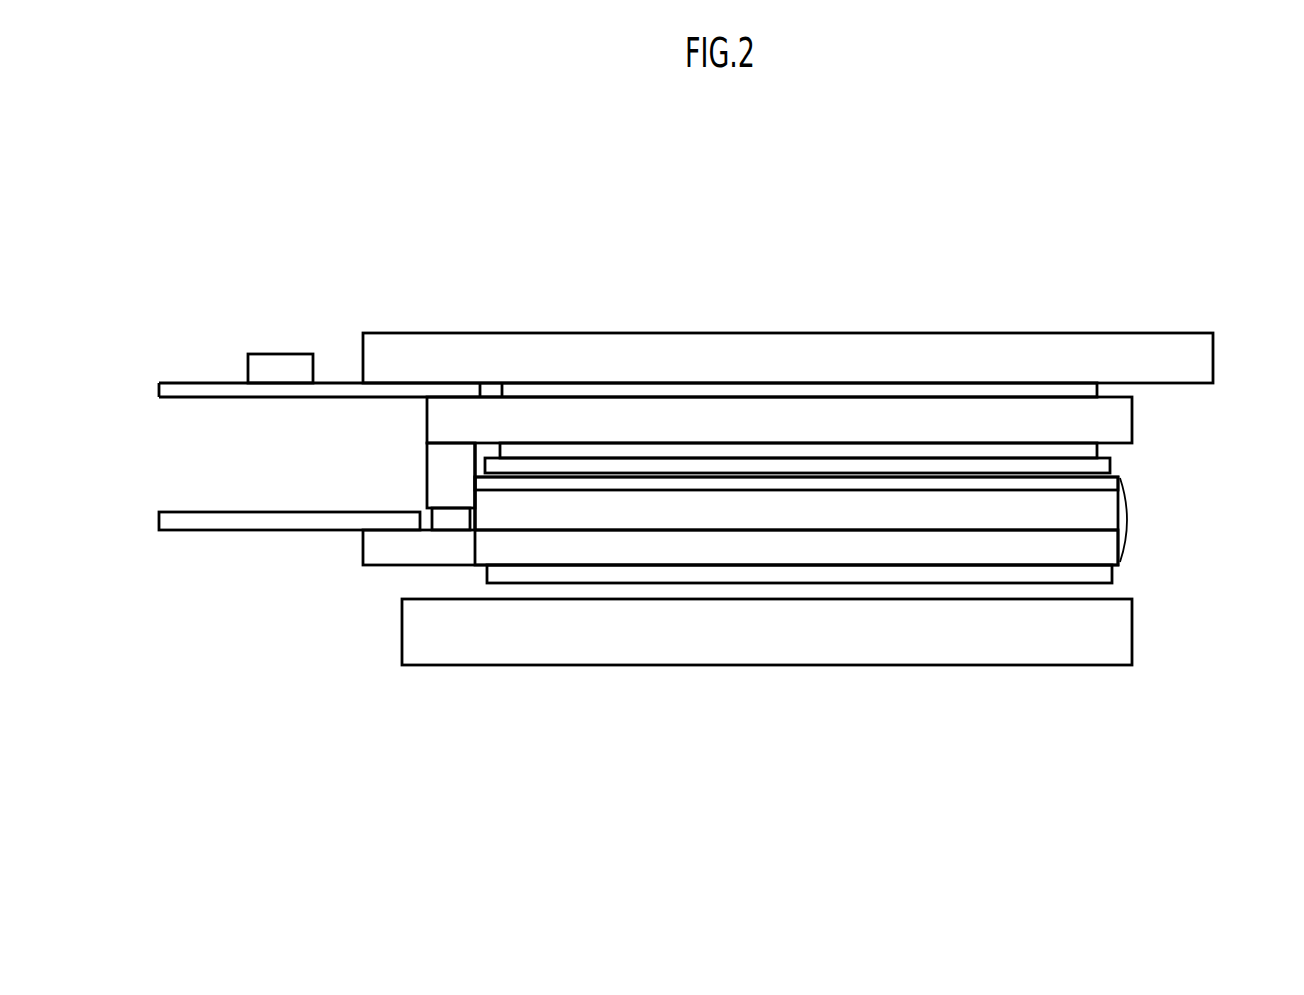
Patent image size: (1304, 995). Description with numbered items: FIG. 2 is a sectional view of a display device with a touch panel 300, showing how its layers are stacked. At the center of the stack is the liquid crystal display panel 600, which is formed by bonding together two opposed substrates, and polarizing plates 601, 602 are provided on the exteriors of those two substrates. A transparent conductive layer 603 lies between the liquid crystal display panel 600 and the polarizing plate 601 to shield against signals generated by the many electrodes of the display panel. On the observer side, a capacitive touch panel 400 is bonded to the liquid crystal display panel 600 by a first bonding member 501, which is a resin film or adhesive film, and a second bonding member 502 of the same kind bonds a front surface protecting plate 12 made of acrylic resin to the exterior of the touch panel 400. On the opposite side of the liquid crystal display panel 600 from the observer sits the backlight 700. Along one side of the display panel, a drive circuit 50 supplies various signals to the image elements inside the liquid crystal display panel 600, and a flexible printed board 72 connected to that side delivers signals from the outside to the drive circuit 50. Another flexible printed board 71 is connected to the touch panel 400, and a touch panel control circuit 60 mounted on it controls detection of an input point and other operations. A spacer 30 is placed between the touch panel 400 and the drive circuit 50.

The front surface protecting plate 12 is at (706, 350).
The flexible printed board 71 is at (218, 380).
The touch panel control circuit 60 is at (276, 370).
The spacer 30 is at (426, 468).
The flexible printed board 72 is at (275, 530).
The drive circuit 50 is at (450, 522).
The display device with a touch panel 300 is at (743, 678).
The second bonding member 502 is at (1103, 389).
The touch panel 400 is at (1135, 417).
The first bonding member 501 is at (1100, 450).
The polarizing plate 601 is at (1108, 470).
The transparent conductive layer 603 is at (1115, 488).
The liquid crystal display panel 600 is at (1125, 520).
The polarizing plate 602 is at (1112, 574).
The backlight 700 is at (1118, 632).